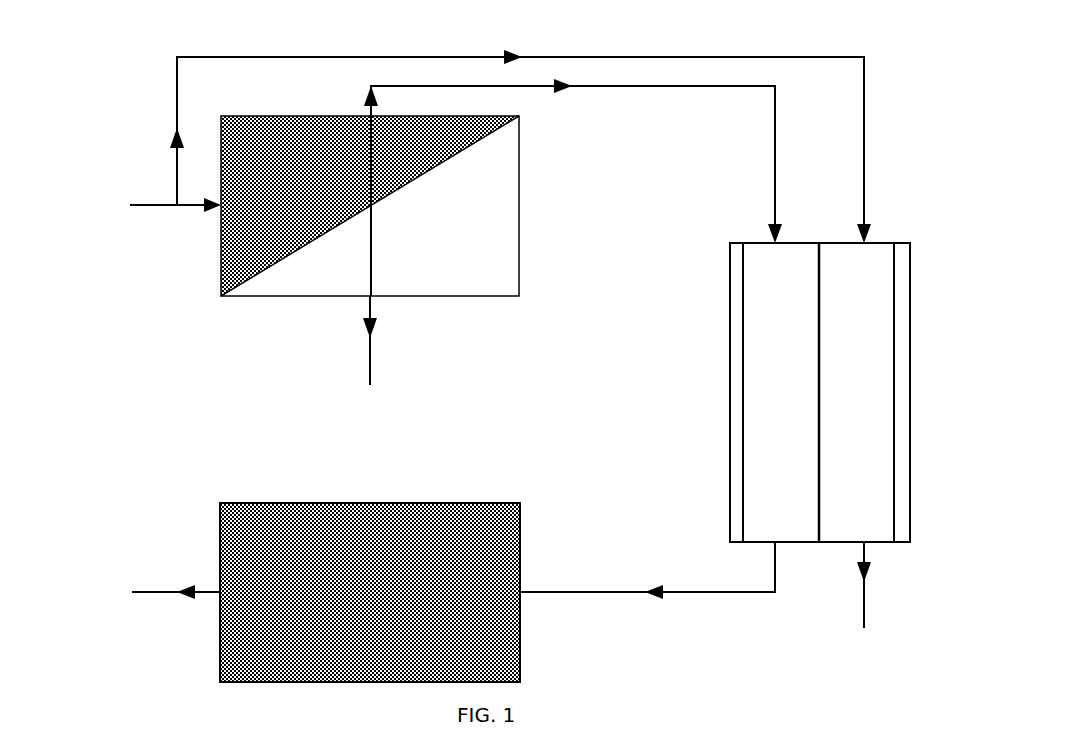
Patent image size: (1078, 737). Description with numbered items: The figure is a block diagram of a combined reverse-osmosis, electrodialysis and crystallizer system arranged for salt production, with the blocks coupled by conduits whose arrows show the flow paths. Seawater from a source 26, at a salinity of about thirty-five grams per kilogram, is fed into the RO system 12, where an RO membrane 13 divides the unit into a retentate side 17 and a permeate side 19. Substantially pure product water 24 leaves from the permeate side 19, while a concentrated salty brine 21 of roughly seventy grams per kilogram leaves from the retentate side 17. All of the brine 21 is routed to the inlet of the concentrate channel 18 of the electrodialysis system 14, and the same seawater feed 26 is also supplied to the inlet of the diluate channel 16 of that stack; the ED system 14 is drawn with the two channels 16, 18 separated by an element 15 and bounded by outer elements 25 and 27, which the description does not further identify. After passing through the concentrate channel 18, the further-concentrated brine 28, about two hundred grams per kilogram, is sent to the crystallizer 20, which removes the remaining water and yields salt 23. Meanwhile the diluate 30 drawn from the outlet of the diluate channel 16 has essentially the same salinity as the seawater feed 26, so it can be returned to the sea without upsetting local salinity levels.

The reverse-osmosis system 12 is at (198, 127).
The RO membrane 13 is at (302, 246).
The retentate side 17 is at (370, 206).
The permeate side 19 is at (370, 206).
The concentrated salty brine 21 is at (250, 57).
The seawater feed 26 is at (165, 200).
The product water 24 is at (368, 365).
The electrodialysis system 14 is at (692, 282).
The ion exchange membrane 15 is at (821, 362).
The concentrate channel 18 is at (781, 392).
The diluate channel 16 is at (856, 392).
The first electrode 25 is at (737, 403).
The second electrode 27 is at (902, 394).
The further-concentrated brine 28 is at (700, 595).
The diluate 30 is at (867, 616).
The crystallizer 20 is at (370, 592).
The salt 23 is at (165, 596).